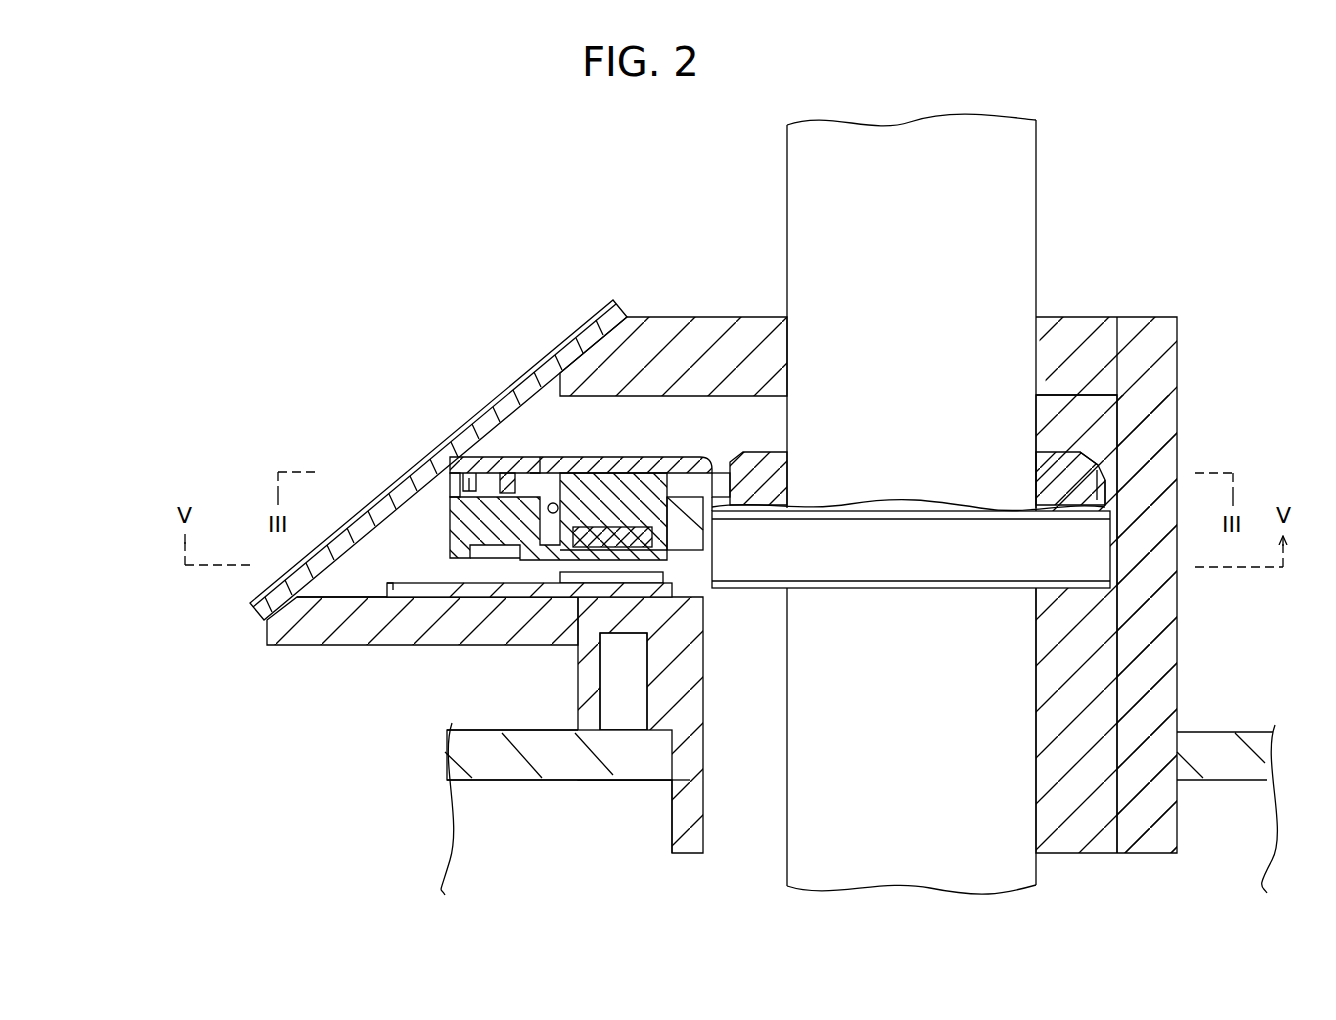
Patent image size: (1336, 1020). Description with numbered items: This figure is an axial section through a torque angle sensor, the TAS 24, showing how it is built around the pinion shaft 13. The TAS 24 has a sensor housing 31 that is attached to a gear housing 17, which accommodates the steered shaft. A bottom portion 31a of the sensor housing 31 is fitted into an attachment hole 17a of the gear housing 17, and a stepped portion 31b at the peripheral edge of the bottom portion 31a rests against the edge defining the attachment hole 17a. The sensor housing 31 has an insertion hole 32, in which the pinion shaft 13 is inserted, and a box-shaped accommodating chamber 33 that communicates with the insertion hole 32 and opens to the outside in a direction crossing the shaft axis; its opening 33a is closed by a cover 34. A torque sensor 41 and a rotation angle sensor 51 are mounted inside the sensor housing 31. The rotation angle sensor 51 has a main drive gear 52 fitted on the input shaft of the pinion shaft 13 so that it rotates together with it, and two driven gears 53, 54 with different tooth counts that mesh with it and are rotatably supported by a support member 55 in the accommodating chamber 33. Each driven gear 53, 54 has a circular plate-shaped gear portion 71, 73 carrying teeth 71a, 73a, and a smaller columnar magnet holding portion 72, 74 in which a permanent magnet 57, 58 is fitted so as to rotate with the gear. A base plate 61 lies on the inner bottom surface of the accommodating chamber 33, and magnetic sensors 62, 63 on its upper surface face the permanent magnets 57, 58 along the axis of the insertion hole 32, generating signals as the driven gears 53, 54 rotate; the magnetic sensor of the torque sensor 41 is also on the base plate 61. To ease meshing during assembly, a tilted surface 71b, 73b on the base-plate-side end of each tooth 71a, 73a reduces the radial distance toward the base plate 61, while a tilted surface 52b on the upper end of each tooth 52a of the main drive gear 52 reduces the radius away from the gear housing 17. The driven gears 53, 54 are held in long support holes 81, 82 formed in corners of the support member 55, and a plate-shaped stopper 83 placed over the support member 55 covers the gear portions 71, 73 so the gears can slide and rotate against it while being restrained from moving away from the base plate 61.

The pinion shaft 13 is at (1038, 168).
The gear housing 17 is at (1210, 732).
The attachment hole 17a is at (690, 768).
The TAS 24 is at (1184, 296).
The sensor housing 31 is at (1178, 640).
The bottom portion 31a is at (640, 745).
The stepped portion 31b is at (590, 728).
The insertion hole 32 is at (1092, 685).
The accommodating chamber 33 is at (397, 644).
The opening 33a is at (336, 592).
The cover 34 is at (568, 337).
The torque sensor 41 is at (763, 592).
The rotation angle sensor 51 is at (516, 537).
The main drive gear 52 is at (1062, 452).
The tooth 52a is at (1118, 486).
The tilted surface 52b is at (1097, 495).
The driven gear 53 is at (558, 487).
The driven gear 54 is at (588, 457).
The support member 55 is at (457, 575).
The permanent magnet 57 is at (886, 523).
The permanent magnet 58 is at (705, 531).
The base plate 61 is at (405, 583).
The magnetic sensor 62 is at (588, 625).
The magnetic sensor 63 is at (542, 584).
The gear portion 71 is at (610, 457).
The gear portion 73 is at (693, 458).
The tooth 71a is at (468, 422).
The tooth 73a is at (503, 472).
The tilted surface 71b is at (369, 458).
The tilted surface 73b is at (458, 490).
The magnet holding portion 72 is at (690, 537).
The magnet holding portion 74 is at (710, 567).
The support hole 81 is at (486, 640).
The support hole 82 is at (512, 582).
The stopper 83 is at (542, 456).